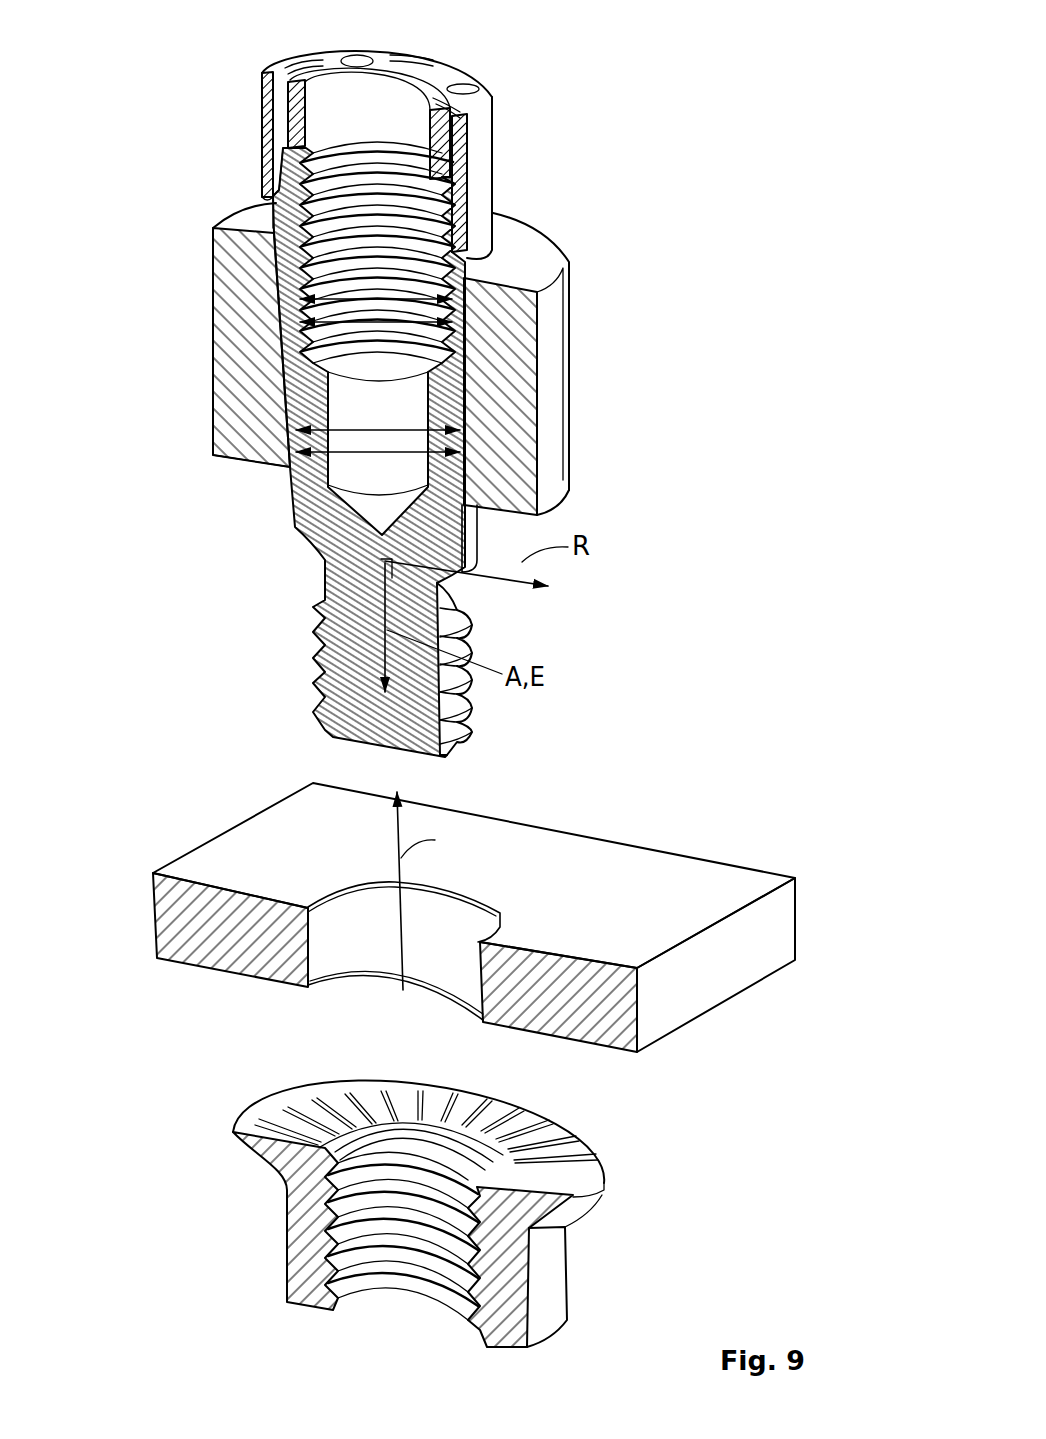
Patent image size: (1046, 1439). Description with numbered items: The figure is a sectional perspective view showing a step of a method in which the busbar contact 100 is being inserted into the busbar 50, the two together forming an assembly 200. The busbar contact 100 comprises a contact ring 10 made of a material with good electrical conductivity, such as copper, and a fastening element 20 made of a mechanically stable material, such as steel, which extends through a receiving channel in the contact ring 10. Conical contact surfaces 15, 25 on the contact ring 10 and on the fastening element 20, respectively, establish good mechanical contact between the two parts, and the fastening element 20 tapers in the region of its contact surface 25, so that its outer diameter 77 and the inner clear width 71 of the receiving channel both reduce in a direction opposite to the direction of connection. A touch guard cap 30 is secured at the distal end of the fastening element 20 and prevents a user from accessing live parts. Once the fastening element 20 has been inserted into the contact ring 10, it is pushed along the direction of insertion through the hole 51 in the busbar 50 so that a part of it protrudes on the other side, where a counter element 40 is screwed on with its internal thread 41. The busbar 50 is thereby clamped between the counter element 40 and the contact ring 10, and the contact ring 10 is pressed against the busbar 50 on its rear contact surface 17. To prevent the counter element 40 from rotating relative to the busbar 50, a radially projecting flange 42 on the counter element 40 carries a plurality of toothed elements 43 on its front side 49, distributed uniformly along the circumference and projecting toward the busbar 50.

The busbar contact 100 is at (190, 72).
The assembly 200 is at (607, 100).
The contact ring 10 is at (590, 460).
The conical contact surface 15 is at (466, 370).
The rear contact surface 17 is at (260, 470).
The fastening element 20 is at (470, 248).
The conical contact surface 25 is at (290, 255).
The touch guard cap 30 is at (331, 62).
The inner clear width 71 is at (487, 265).
The outer diameter 77 is at (300, 310).
The busbar 50 is at (474, 905).
The hole 51 is at (444, 945).
The counter element 40 is at (284, 1262).
The internal thread 41 is at (456, 1275).
The radially projecting flange 42 is at (471, 1215).
The toothed elements 43 is at (300, 1120).
The front side 49 is at (528, 1158).